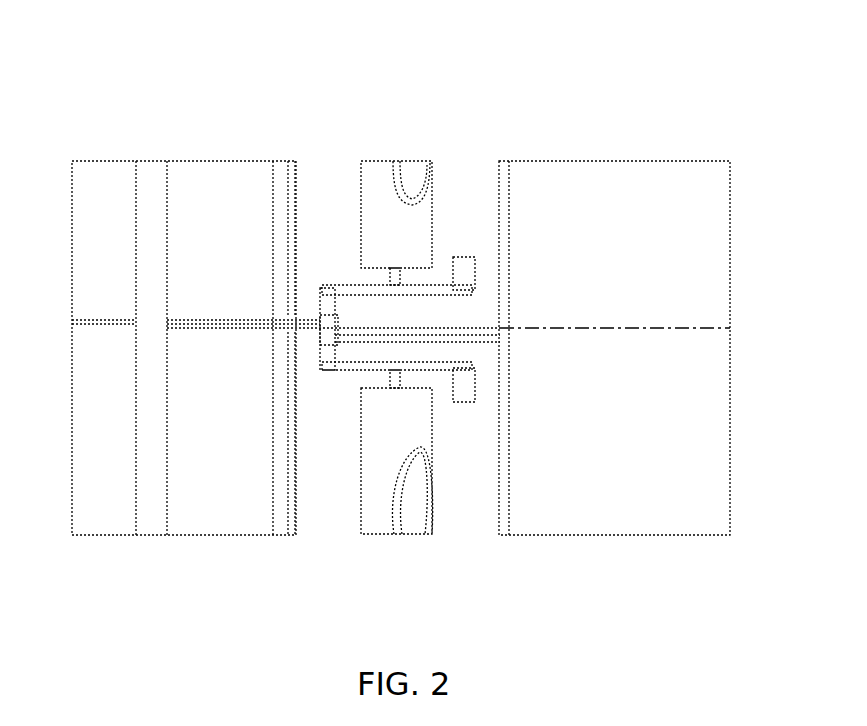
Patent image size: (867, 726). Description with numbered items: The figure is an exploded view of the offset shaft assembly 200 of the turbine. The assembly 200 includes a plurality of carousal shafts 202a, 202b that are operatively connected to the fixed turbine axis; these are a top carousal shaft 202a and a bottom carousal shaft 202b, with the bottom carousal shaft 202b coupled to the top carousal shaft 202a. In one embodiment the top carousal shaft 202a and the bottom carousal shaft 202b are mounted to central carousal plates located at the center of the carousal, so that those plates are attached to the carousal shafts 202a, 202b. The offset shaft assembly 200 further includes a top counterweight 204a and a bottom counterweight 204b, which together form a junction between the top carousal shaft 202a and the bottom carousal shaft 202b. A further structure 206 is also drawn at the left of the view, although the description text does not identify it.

The offset shaft assembly 200 is at (93, 82).
The top carousal shaft 202a is at (396, 283).
The bottom carousal shaft 202b is at (397, 380).
The top counterweight 204a is at (460, 273).
The bottom counterweight 204b is at (460, 380).
The housing structure 206 is at (148, 465).